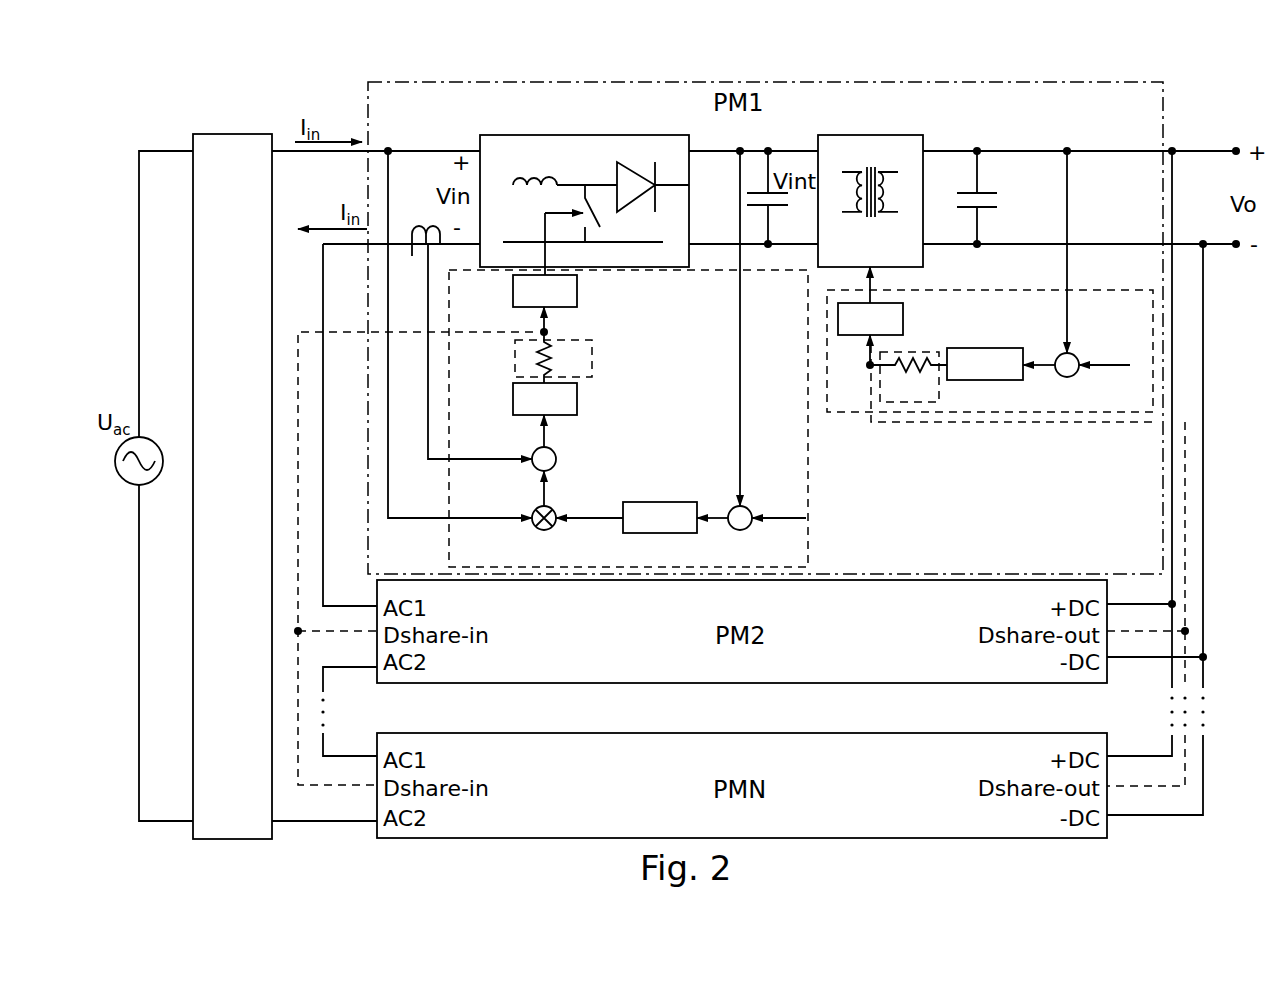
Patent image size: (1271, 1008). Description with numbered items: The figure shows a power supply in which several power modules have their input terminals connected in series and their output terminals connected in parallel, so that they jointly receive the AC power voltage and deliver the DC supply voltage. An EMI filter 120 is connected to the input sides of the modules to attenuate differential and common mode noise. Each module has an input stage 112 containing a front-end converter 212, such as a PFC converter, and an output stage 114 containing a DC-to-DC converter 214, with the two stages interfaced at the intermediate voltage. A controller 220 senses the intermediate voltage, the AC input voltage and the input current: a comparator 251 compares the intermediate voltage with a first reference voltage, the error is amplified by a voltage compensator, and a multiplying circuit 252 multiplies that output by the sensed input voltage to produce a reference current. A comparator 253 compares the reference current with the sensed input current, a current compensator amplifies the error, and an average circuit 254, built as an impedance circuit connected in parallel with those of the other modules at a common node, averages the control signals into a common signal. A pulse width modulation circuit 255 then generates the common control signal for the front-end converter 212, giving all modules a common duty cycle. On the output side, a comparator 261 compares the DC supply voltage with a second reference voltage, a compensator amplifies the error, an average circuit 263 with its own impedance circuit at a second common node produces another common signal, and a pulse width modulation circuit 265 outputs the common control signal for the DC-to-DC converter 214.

The input stage 112 is at (584, 155).
The output stage 114 is at (865, 151).
The EMI filter 120 is at (250, 566).
The front-end converter 212 is at (585, 168).
The DC-to-DC converter 214 is at (891, 163).
The controller 220 is at (808, 455).
The comparator 251 is at (736, 506).
The multiplying circuit 252 is at (553, 509).
The comparator 253 is at (555, 453).
The average circuit 254 is at (592, 347).
The pulse width modulation circuit 255 is at (577, 290).
The comparator 261 is at (1056, 356).
The average circuit 263 is at (908, 352).
The pulse width modulation circuit 265 is at (838, 318).